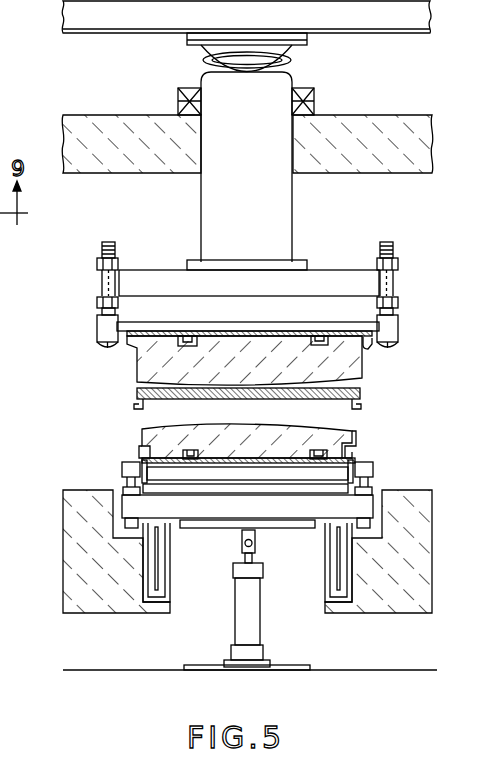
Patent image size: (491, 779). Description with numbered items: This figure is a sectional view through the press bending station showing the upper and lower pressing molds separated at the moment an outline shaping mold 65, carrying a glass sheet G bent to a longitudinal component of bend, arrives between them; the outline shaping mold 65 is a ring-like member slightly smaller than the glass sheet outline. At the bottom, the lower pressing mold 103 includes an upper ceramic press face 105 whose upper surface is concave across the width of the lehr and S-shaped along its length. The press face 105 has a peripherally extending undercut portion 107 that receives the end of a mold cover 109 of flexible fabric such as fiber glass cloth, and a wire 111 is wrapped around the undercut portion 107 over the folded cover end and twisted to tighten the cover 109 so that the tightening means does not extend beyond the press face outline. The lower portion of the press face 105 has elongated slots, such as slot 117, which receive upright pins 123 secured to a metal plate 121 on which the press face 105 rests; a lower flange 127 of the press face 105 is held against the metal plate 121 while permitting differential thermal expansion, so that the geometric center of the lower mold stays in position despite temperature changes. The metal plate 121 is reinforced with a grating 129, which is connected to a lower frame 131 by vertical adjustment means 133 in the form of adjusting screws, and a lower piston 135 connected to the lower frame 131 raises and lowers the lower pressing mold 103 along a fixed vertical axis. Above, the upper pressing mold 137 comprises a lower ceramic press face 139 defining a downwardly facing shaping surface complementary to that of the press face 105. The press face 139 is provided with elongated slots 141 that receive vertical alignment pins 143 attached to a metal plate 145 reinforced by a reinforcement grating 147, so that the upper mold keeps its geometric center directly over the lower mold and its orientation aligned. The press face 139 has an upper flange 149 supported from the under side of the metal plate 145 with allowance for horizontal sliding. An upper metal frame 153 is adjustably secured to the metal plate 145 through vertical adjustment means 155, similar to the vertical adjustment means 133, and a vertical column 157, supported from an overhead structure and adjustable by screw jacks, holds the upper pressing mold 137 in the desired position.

The vertical column 157 is at (293, 204).
The upper metal frame 153 is at (157, 268).
The vertical adjustment means 155 is at (100, 310).
The reinforcement grating 147 is at (200, 323).
The metal plate 145 is at (277, 331).
The vertical alignment pins 143 is at (188, 330).
The elongated slots 141 is at (328, 336).
The lower ceramic press face 139 is at (137, 370).
The upper flange 149 is at (368, 348).
The upper pressing mold 137 is at (89, 352).
The glass sheet G is at (365, 393).
The outline shaping mold 65 is at (133, 403).
The lower pressing mold 103 is at (125, 425).
The upper ceramic press face 105 is at (240, 427).
The mold cover 109 is at (357, 431).
The undercut portion 107 is at (352, 455).
The wire 111 is at (141, 446).
The elongated slot 117 is at (187, 450).
The upright pins 123 is at (318, 450).
The lower flange 127 is at (142, 463).
The grating 129 is at (290, 481).
The metal plate 121 is at (268, 468).
The vertical adjustment means 133 is at (122, 478).
The lower frame 131 is at (180, 528).
The lower piston 135 is at (262, 625).